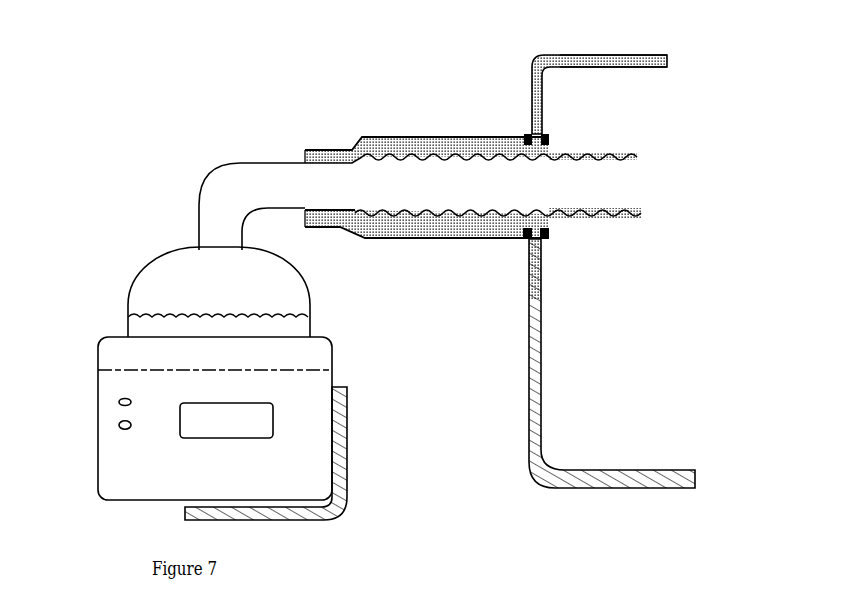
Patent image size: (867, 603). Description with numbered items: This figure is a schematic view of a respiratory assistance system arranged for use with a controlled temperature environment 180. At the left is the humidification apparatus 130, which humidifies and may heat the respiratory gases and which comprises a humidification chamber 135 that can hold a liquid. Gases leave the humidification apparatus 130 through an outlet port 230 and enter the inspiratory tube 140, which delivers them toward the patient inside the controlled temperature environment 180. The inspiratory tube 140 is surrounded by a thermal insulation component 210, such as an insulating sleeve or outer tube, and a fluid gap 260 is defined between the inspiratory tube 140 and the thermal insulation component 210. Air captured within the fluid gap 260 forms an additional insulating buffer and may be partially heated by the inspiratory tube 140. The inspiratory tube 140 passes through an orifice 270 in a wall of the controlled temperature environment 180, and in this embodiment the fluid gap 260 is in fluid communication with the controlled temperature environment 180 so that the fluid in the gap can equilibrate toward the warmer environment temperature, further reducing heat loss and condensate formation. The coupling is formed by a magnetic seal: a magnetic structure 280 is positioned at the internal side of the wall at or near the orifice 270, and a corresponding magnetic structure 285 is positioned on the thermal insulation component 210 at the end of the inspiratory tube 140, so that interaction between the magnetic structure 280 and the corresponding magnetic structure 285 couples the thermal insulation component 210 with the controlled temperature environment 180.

The humidification apparatus 130 is at (140, 475).
The humidification chamber 135 is at (165, 273).
The inspiratory tube 140 is at (620, 182).
The controlled temperature environment 180 is at (652, 63).
The thermal insulation component 210 is at (457, 135).
The outlet port 230 is at (275, 185).
The fluid gap 260 is at (408, 148).
The orifice 270 is at (545, 222).
The magnetic structure 280 is at (547, 138).
The corresponding magnetic structure 285 is at (527, 137).